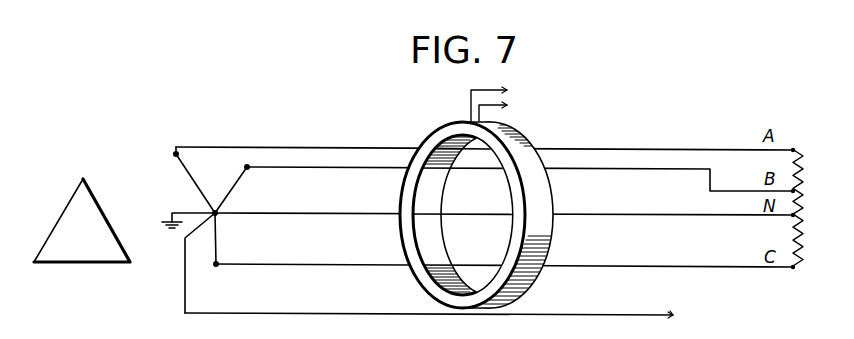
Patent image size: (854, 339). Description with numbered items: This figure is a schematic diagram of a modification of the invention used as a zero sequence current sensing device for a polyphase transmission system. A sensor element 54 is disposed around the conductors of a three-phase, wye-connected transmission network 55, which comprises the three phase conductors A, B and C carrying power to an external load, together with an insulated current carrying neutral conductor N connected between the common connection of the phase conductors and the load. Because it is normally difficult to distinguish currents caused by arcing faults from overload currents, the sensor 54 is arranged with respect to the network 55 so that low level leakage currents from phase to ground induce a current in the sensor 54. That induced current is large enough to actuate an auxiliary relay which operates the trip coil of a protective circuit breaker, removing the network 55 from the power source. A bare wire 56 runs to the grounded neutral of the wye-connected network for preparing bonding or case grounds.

The sensor element 54 is at (540, 243).
The network 55 is at (341, 109).
The bare wire 56 is at (598, 304).